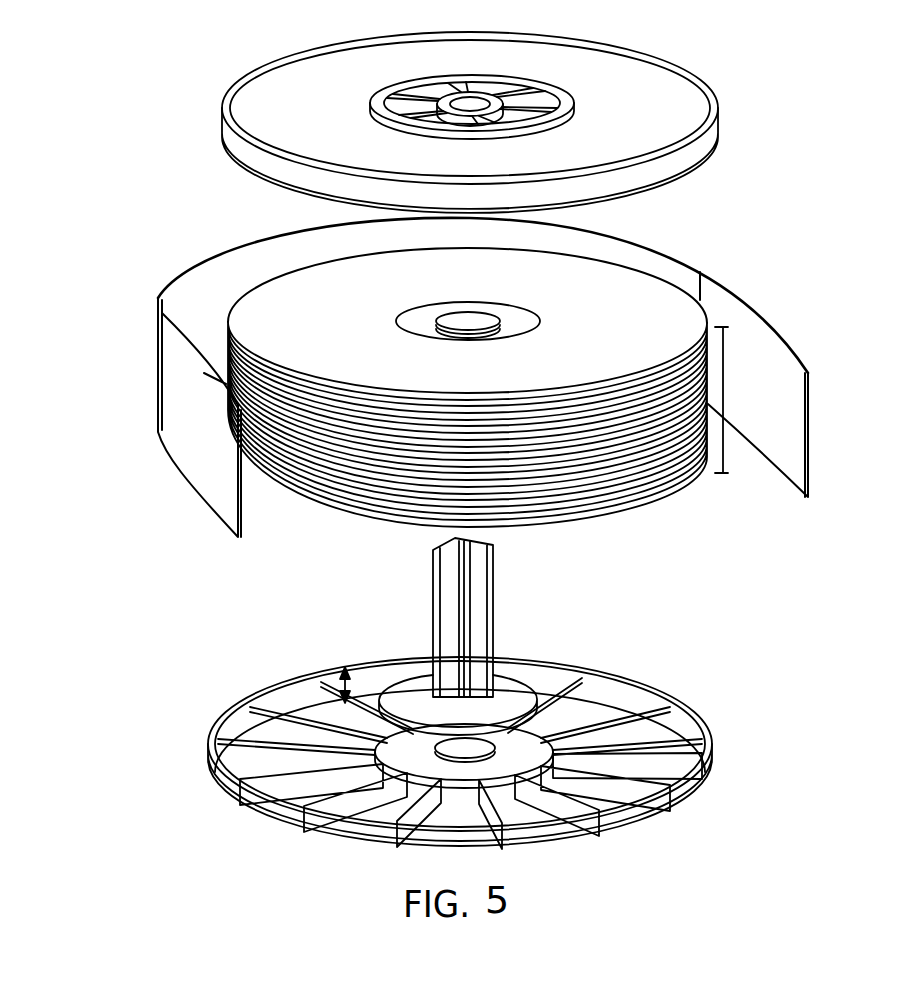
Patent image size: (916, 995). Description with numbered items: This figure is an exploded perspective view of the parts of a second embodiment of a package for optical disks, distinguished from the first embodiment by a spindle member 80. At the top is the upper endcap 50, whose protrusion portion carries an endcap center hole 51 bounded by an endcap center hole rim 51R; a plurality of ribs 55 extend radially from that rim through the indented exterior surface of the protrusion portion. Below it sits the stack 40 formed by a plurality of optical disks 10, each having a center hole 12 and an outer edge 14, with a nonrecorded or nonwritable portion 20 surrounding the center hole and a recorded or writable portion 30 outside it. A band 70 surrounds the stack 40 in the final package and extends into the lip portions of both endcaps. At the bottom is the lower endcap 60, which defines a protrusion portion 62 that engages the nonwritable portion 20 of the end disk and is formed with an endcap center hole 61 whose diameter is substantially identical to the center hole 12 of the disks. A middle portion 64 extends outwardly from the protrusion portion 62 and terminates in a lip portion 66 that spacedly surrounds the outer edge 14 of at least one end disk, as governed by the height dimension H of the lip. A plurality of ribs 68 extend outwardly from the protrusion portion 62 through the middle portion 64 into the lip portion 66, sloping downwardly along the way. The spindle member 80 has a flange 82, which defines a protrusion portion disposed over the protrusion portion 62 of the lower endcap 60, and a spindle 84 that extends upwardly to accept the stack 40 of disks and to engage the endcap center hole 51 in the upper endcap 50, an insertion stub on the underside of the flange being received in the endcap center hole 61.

The optical disk 10 is at (492, 374).
The center hole 12 is at (452, 298).
The outer edge 14 is at (250, 290).
The nonrecorded or nonwritable portion 20 is at (513, 318).
The recorded or writable portion 30 is at (634, 352).
The stack 40 is at (724, 382).
The upper endcap 50 is at (561, 122).
The endcap center hole 51 is at (480, 96).
The endcap center hole rim 51R is at (493, 120).
The ribs 55 is at (576, 106).
The lower endcap 60 is at (499, 730).
The endcap center hole 61 is at (450, 760).
The protrusion portion 62 is at (505, 755).
The middle portion 64 is at (310, 700).
The lip portion 66 is at (662, 705).
The ribs 68 is at (300, 760).
The band 70 is at (790, 340).
The spindle member 80 is at (512, 636).
The flange 82 is at (532, 684).
The spindle 84 is at (433, 600).
The height dimension H is at (345, 670).